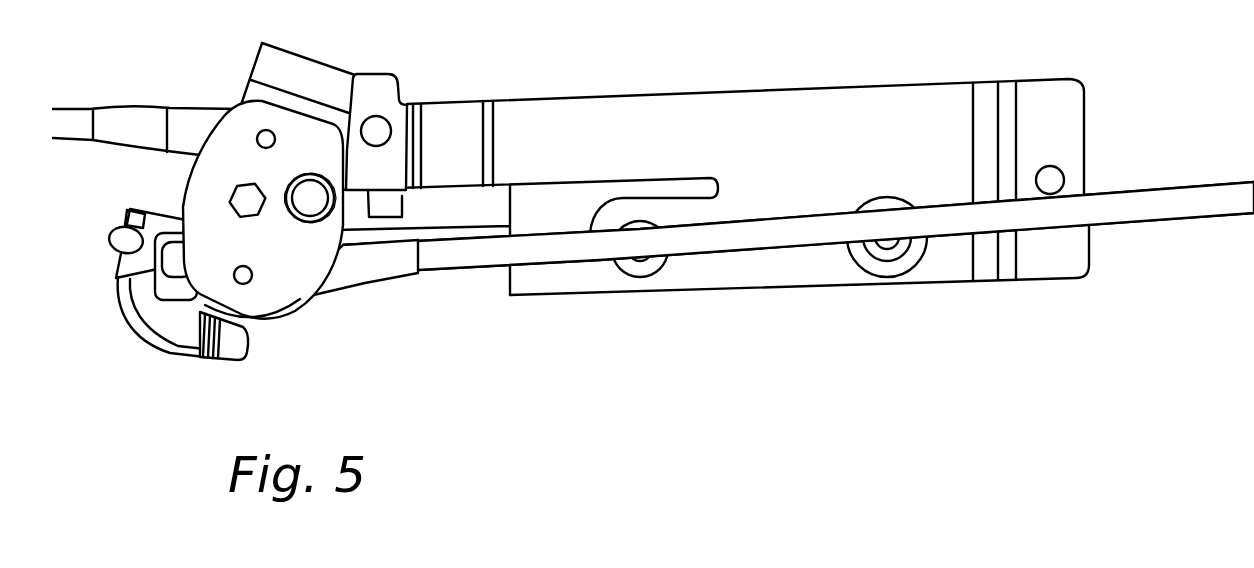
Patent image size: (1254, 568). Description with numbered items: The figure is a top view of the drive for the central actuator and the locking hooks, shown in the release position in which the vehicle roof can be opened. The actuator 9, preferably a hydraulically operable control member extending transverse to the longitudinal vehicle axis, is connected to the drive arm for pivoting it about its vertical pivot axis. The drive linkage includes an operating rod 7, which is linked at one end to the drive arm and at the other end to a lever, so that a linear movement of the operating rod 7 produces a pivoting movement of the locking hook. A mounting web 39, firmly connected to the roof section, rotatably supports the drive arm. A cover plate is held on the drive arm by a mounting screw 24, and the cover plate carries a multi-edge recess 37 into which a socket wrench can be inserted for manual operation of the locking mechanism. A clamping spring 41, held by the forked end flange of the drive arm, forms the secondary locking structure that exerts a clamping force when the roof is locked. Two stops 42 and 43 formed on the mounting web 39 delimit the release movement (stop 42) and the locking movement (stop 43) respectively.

The operating rod 7 is at (56, 116).
The actuator 9 is at (572, 291).
The mounting screw 24 is at (309, 188).
The multi-edge recess 37 is at (253, 216).
The mounting web 39 is at (541, 108).
The clamping spring 41 is at (224, 352).
The stop 42 is at (349, 74).
The stop 43 is at (396, 203).